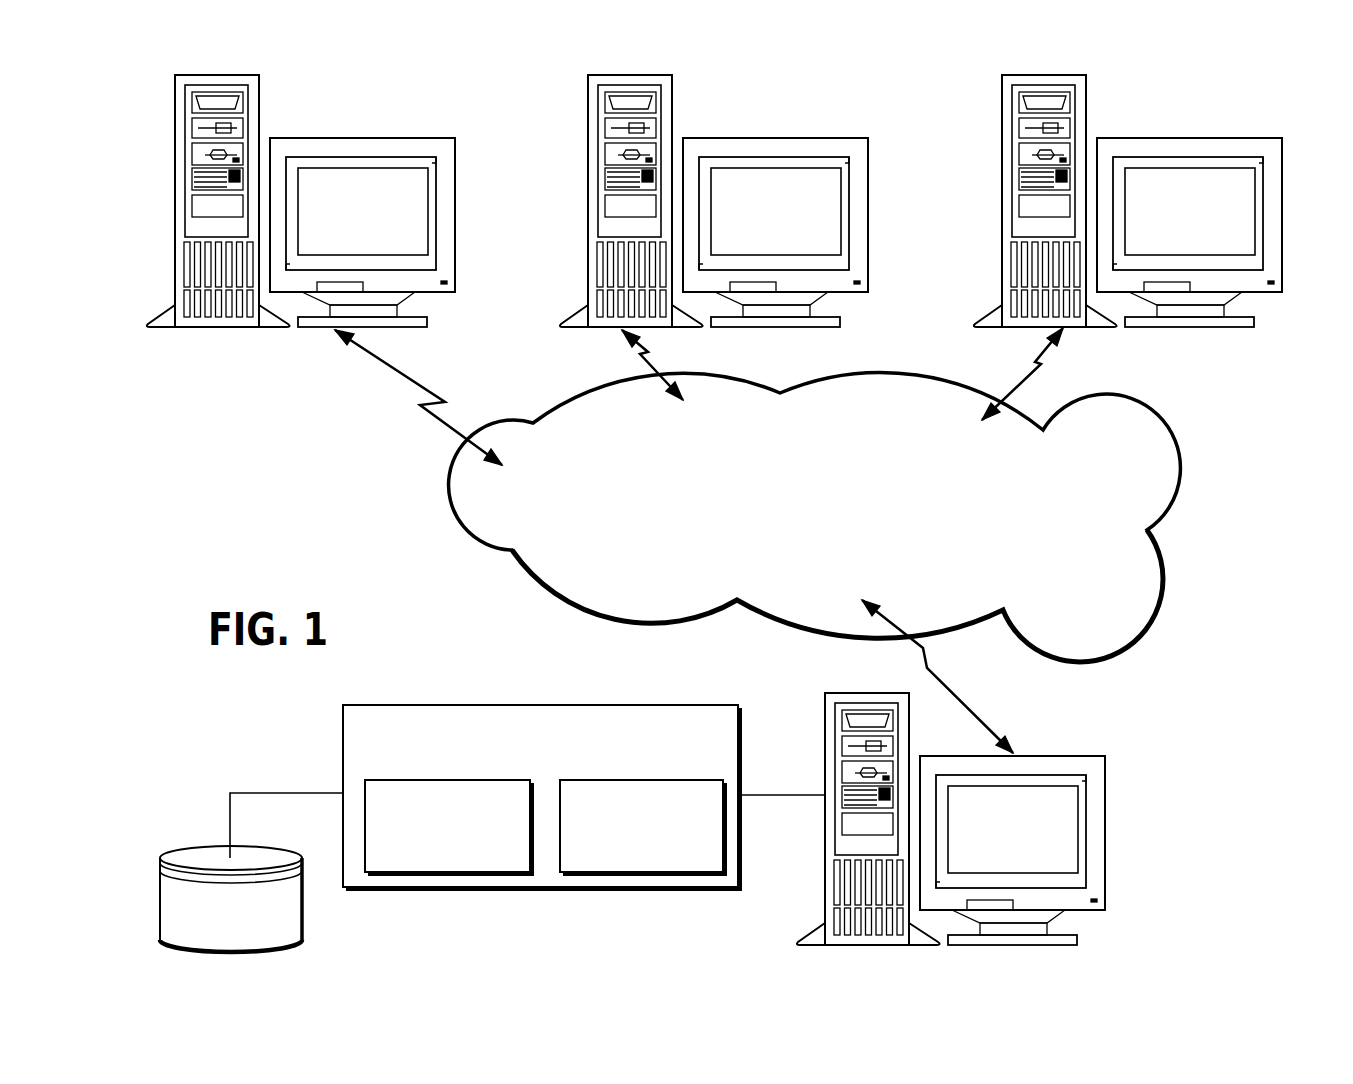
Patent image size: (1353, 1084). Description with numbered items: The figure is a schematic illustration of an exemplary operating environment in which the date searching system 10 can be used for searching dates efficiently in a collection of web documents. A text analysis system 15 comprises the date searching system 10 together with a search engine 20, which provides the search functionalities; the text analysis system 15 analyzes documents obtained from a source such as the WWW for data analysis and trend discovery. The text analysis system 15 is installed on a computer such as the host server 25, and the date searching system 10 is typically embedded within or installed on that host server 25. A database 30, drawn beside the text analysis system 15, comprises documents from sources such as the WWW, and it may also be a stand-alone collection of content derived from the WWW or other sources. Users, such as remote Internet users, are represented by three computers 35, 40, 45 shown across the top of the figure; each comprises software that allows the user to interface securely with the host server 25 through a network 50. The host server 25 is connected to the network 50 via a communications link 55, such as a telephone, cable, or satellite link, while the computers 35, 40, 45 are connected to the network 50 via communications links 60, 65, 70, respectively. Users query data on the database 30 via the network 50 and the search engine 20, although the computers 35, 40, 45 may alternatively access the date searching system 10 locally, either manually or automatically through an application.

The date searching system 10 is at (468, 780).
The text analysis system 15 is at (343, 755).
The search engine 20 is at (665, 780).
The host server 25 is at (825, 738).
The database 30 is at (160, 880).
The computer 35 is at (175, 122).
The computer 40 is at (588, 122).
The computer 45 is at (1002, 122).
The network 50 is at (1145, 443).
The communications link 55 is at (940, 660).
The communications link 60 is at (387, 362).
The communications link 65 is at (655, 373).
The communications link 70 is at (1018, 380).